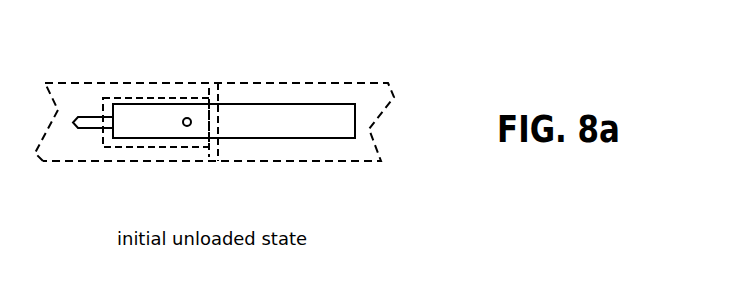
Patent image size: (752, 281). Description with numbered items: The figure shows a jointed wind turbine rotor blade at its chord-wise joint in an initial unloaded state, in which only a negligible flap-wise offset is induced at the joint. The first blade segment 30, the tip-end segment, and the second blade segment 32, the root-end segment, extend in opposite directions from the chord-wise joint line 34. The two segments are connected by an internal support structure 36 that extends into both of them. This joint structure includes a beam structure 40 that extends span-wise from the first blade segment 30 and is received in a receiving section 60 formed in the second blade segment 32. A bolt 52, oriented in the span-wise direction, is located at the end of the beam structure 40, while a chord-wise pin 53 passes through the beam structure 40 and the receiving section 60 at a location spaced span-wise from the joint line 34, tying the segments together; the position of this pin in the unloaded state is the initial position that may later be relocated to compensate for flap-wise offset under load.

The first blade segment 30 is at (297, 83).
The second blade segment 32 is at (62, 163).
The chord-wise joint line 34 is at (208, 81).
The internal support structure 36 is at (149, 131).
The beam structure 40 is at (298, 138).
The bolt 52 is at (88, 118).
The chord-wise pin 53 is at (187, 127).
The receiving section 60 is at (145, 98).